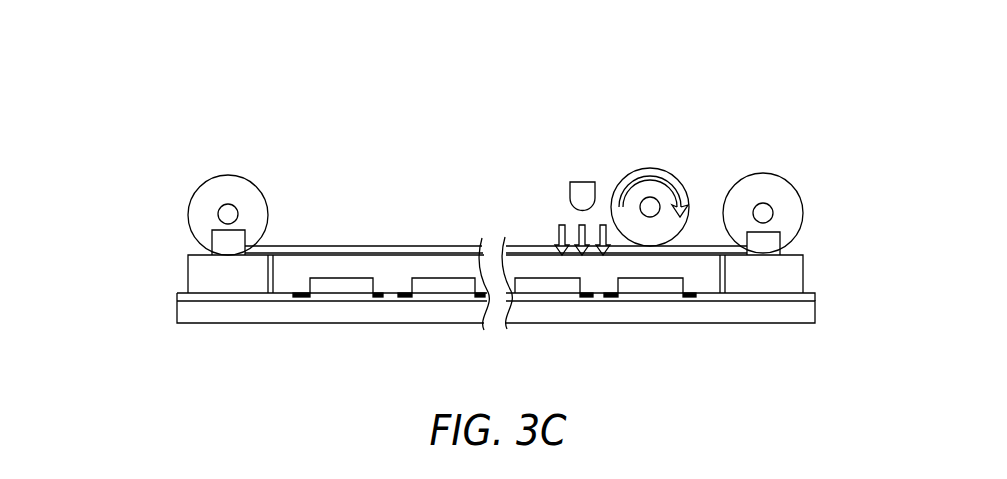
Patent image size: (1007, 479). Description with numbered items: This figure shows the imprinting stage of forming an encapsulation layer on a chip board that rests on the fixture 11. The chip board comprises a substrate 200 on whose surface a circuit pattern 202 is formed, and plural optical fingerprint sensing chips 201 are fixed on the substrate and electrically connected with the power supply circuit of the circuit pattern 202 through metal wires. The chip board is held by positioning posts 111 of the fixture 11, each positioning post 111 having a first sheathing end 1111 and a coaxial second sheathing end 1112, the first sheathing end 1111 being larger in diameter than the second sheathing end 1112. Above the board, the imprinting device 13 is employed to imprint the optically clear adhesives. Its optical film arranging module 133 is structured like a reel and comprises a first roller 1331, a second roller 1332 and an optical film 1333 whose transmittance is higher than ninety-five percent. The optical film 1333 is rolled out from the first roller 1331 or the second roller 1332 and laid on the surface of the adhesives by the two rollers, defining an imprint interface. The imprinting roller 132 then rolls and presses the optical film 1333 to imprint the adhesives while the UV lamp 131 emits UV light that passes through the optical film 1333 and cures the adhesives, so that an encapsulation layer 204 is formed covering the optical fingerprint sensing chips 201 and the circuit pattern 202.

The fixture 11 is at (783, 310).
The imprinting device 13 is at (110, 33).
The positioning post 111 is at (569, 250).
The first sheathing end 1111 is at (782, 263).
The second sheathing end 1112 is at (778, 242).
The UV lamp 131 is at (580, 187).
The imprinting roller 132 is at (648, 168).
The optical film arranging module 133 is at (110, 160).
The first roller 1331 is at (762, 188).
The second roller 1332 is at (226, 192).
The optical film 1333 is at (523, 246).
The substrate 200 is at (496, 324).
The optical fingerprint sensing chip 201 is at (642, 287).
The circuit pattern 202 is at (690, 294).
The encapsulation layer 204 is at (393, 282).